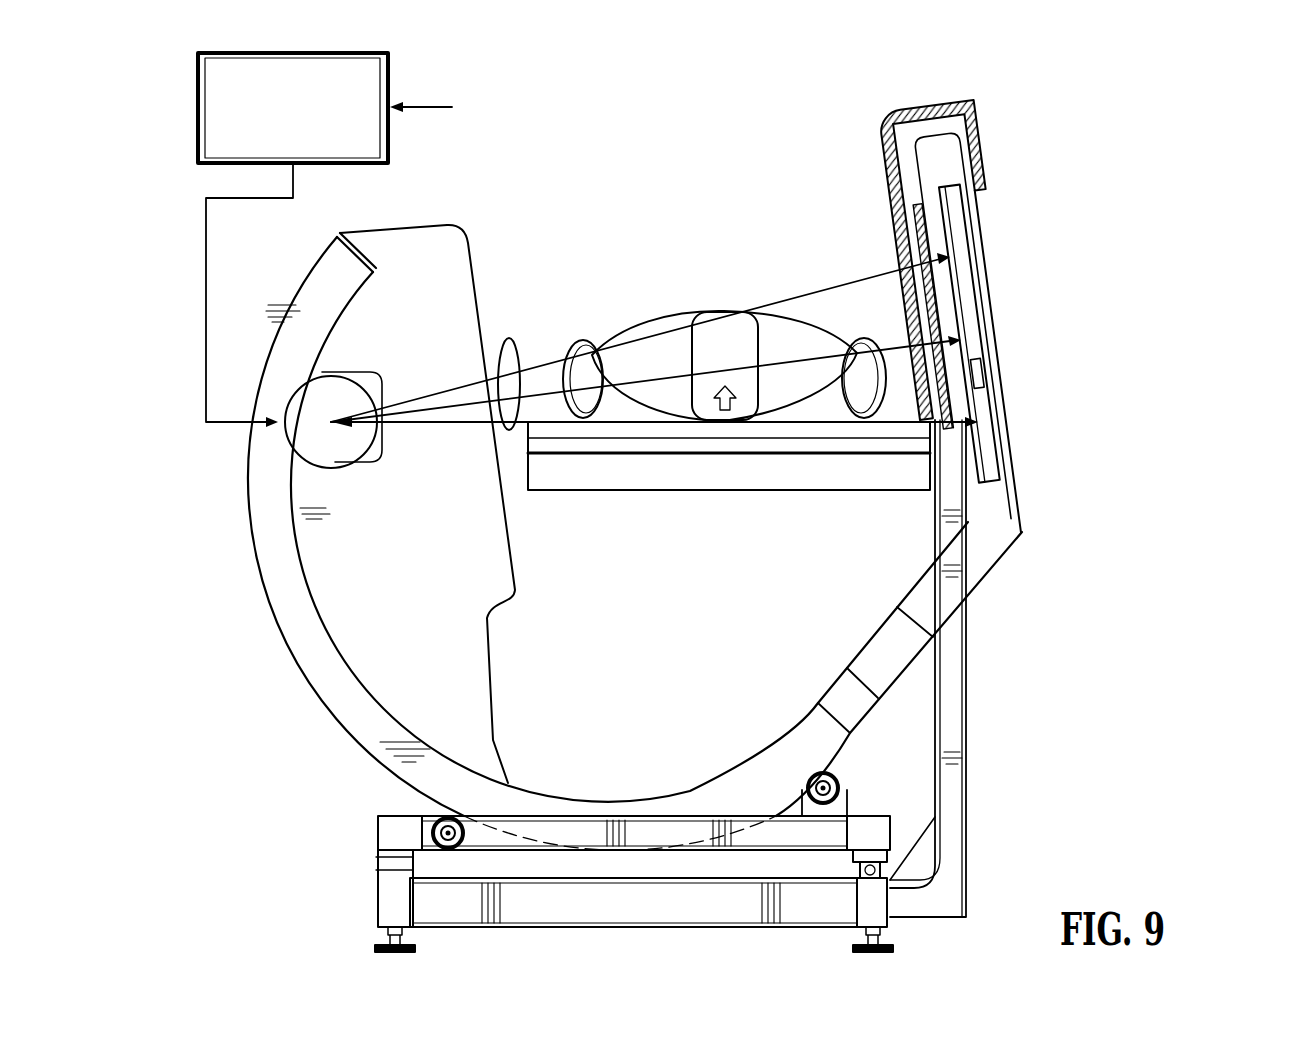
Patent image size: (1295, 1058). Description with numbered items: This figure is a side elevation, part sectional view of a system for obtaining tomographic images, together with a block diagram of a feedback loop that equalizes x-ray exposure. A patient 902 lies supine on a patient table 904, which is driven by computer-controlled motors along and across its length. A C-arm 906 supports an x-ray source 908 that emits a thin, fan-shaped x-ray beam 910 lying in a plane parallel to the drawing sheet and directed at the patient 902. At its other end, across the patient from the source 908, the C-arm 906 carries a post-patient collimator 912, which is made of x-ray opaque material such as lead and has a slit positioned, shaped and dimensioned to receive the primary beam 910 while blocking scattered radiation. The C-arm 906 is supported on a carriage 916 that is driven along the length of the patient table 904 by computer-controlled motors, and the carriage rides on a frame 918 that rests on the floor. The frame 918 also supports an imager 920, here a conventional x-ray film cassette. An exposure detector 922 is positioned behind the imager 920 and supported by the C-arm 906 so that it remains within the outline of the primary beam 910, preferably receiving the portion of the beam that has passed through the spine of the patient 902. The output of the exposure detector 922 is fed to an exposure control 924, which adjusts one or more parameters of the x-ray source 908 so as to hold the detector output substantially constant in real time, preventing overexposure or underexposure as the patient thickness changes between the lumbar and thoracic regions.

The patient 902 is at (623, 325).
The patient table 904 is at (866, 478).
The C-arm 906 is at (307, 637).
The x-ray source 908 is at (305, 462).
The x-ray beam 910 is at (510, 338).
The post-patient collimator 912 is at (975, 104).
The carriage 916 is at (388, 828).
The frame 918 is at (388, 908).
The imager 920 is at (940, 288).
The exposure detector 922 is at (980, 362).
The exposure control 924 is at (198, 118).